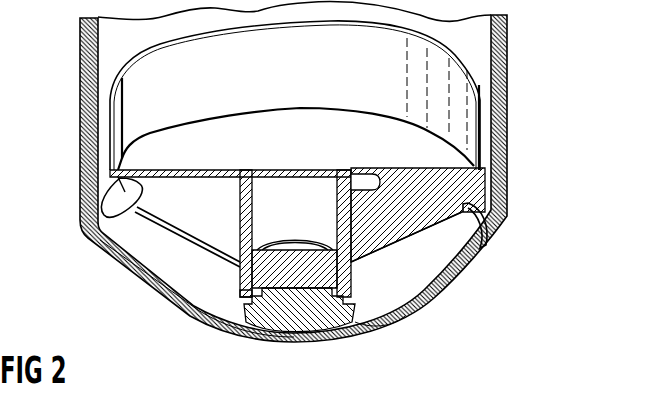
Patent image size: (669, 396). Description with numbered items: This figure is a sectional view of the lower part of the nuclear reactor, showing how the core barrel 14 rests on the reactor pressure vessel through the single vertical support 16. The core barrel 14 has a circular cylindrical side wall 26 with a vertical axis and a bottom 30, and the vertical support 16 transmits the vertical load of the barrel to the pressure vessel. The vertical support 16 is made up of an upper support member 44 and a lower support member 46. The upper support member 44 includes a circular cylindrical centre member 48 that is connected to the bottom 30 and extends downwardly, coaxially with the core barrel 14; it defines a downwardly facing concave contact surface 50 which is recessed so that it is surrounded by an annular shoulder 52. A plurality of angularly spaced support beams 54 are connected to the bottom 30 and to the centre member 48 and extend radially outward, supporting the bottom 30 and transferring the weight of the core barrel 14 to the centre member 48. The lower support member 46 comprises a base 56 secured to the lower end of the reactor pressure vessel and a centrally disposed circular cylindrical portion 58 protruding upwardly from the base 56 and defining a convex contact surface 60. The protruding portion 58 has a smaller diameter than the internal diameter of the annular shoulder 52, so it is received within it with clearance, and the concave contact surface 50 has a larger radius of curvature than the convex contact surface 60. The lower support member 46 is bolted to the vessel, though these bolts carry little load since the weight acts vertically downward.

The core barrel 14 is at (497, 106).
The circular cylindrical side wall 26 is at (110, 107).
The bottom 30 is at (148, 180).
The upper support member 44 is at (222, 263).
The single vertical support 16 is at (233, 286).
The circular cylindrical centre member 48 is at (254, 192).
The convex contact surface 60 is at (284, 287).
The centrally disposed circular cylindrical portion 58 is at (351, 268).
The downwardly facing concave contact surface 50 is at (298, 291).
The annular shoulder 52 is at (246, 298).
The support beams 54 is at (426, 226).
The lower support member 46 is at (368, 309).
The base 56 is at (381, 319).